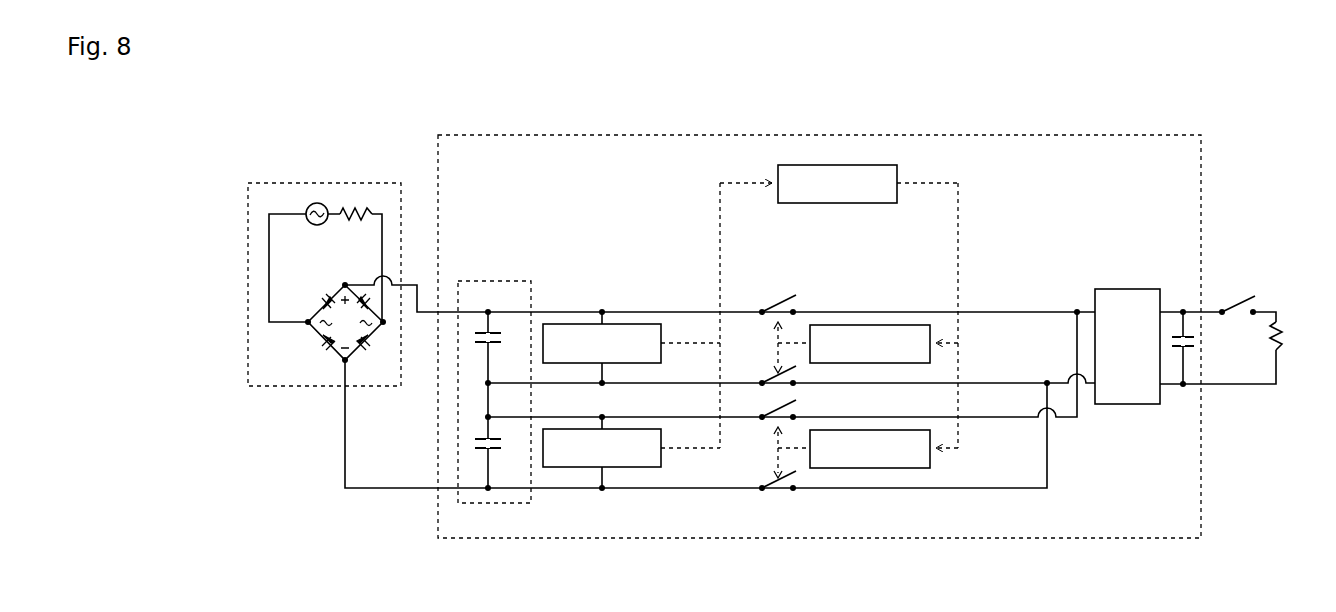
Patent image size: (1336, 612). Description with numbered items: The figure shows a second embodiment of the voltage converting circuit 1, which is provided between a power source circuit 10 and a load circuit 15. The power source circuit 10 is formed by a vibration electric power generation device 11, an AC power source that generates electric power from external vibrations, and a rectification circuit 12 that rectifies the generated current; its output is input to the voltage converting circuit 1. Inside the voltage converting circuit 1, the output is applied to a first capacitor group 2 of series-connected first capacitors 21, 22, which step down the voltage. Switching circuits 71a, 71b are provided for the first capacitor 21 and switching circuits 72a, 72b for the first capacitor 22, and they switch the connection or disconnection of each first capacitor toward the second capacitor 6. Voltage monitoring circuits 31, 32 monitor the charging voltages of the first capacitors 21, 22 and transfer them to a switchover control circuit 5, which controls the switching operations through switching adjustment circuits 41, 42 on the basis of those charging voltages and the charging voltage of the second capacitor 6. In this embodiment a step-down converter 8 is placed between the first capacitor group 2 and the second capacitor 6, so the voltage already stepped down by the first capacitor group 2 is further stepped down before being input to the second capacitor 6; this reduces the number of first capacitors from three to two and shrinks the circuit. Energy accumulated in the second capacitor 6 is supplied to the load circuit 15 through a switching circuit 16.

The voltage converting circuit 1 is at (553, 135).
The first capacitor group 2 is at (483, 281).
The switchover control circuit 5 is at (897, 195).
The second capacitor 6 is at (1178, 348).
The step-down converter 8 is at (1125, 289).
The power source circuit 10 is at (311, 183).
The vibration electric power generation device 11 is at (316, 226).
The rectification circuit 12 is at (328, 344).
The load circuit 15 is at (1280, 344).
The switching circuit 16 is at (1238, 306).
The first capacitor 21 is at (496, 343).
The first capacitor 22 is at (496, 449).
The voltage monitoring circuit 31 is at (661, 352).
The voltage monitoring circuit 32 is at (661, 456).
The switching adjustment circuit 41 is at (930, 352).
The switching adjustment circuit 42 is at (930, 459).
The switching circuit 71a is at (776, 298).
The switching circuit 71b is at (770, 372).
The switching circuit 72a is at (772, 409).
The switching circuit 72b is at (770, 478).